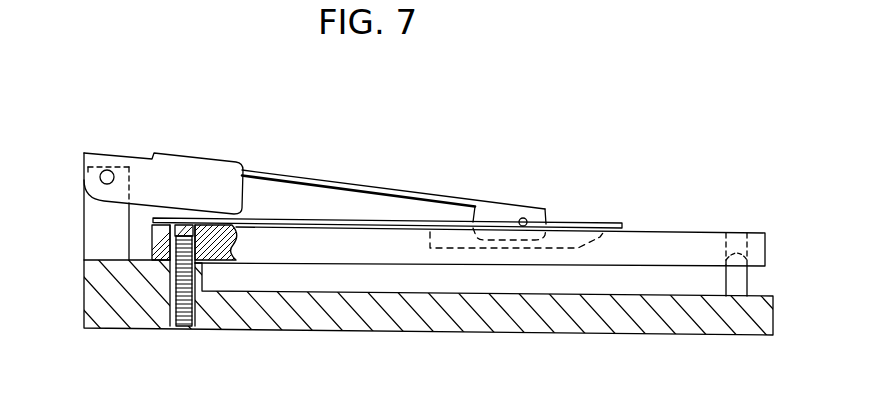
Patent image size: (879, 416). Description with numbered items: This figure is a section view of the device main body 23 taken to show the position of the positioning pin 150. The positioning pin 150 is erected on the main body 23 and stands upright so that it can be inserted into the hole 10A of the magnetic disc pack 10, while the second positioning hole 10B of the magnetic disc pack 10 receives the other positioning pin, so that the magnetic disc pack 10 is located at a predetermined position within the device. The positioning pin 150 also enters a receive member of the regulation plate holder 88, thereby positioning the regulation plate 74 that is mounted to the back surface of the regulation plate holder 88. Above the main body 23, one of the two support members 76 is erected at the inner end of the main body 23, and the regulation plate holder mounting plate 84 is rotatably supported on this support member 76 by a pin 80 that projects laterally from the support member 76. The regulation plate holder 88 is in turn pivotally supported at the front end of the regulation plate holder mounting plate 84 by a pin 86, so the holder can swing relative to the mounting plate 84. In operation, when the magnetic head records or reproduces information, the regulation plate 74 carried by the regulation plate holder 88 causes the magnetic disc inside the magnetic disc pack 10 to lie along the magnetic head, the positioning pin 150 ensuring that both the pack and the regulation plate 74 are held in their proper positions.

The magnetic disc pack 10 is at (658, 232).
The hole for positioning the magnetic disc pack 10A is at (153, 231).
The hole for positioning the magnetic disc pack 10B is at (743, 232).
The main body 23 is at (572, 318).
The regulation plate 74 is at (603, 232).
The support member 76 is at (95, 212).
The pin 80 is at (112, 170).
The regulation plate holder mounting plate 84 is at (385, 185).
The pin 86 is at (523, 218).
The regulation plate holder 88 is at (274, 221).
The positioning pin 150 is at (180, 268).